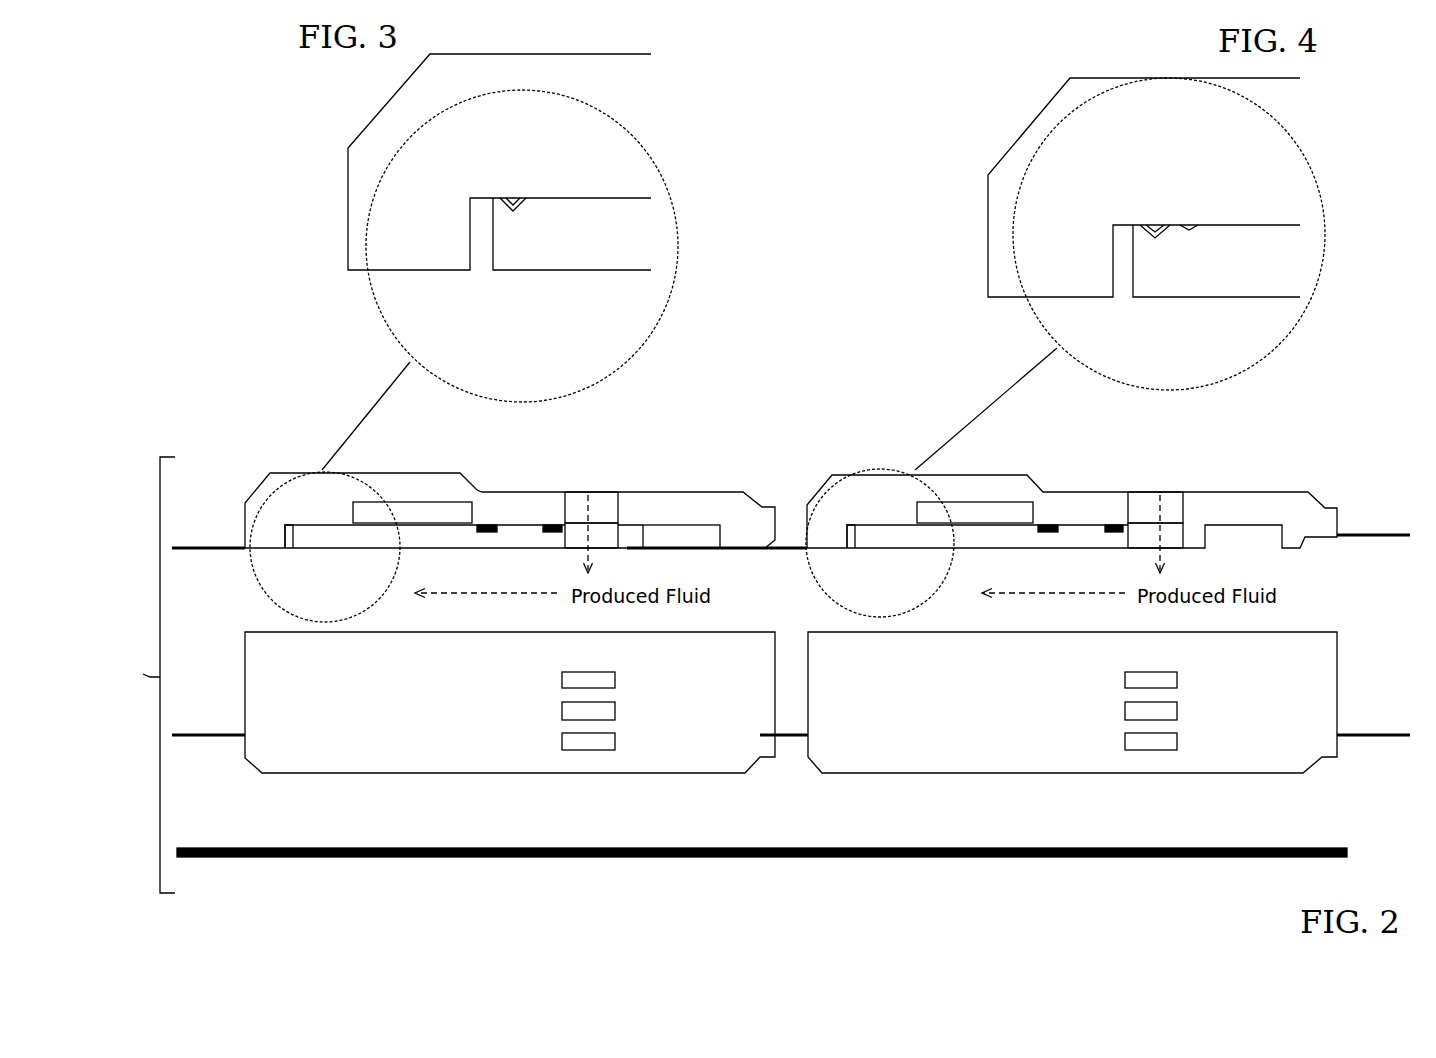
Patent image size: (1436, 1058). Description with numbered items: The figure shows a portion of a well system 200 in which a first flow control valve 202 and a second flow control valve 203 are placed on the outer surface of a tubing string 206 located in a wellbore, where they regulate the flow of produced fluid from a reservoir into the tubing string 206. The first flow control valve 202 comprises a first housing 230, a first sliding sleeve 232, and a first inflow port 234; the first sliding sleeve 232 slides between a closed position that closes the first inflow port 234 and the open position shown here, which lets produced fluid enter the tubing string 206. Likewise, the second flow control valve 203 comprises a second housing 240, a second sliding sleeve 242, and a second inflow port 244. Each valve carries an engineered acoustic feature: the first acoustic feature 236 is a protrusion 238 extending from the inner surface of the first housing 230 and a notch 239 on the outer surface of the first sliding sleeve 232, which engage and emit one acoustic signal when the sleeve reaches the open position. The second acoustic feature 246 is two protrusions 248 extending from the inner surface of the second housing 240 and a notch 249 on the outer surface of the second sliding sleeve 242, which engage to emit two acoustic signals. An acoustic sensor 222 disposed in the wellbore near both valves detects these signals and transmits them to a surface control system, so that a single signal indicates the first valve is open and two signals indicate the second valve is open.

In FIG. 2, the well system 200 is at (165, 691).
In FIG. 2, the first flow control valve 202 is at (478, 746).
In FIG. 2, the second flow control valve 203 is at (985, 746).
In FIG. 2, the tubing string 206 is at (1348, 737).
In FIG. 2, the acoustic sensor 222 is at (805, 858).
In FIG. 2, the first housing 230 is at (467, 490).
In FIG. 2, the first sliding sleeve 232 is at (517, 533).
In FIG. 2, the first inflow port 234 is at (607, 500).
In FIG. 2, the first acoustic feature 236 is at (462, 243).
In FIG. 3, the protrusion 238 is at (508, 198).
In FIG. 3, the notch 239 is at (520, 205).
In FIG. 2, the second housing 240 is at (1308, 493).
In FIG. 2, the second sliding sleeve 242 is at (1068, 532).
In FIG. 2, the second inflow port 244 is at (1160, 500).
In FIG. 2, the second acoustic feature 246 is at (868, 518).
In FIG. 4, the protrusions 248 is at (1165, 216).
In FIG. 4, the notch 249 is at (1157, 215).